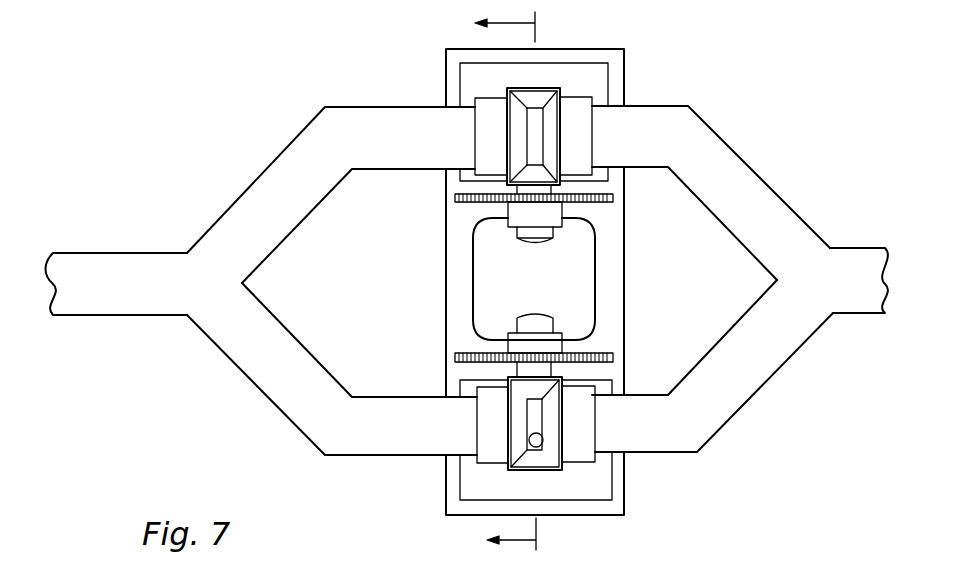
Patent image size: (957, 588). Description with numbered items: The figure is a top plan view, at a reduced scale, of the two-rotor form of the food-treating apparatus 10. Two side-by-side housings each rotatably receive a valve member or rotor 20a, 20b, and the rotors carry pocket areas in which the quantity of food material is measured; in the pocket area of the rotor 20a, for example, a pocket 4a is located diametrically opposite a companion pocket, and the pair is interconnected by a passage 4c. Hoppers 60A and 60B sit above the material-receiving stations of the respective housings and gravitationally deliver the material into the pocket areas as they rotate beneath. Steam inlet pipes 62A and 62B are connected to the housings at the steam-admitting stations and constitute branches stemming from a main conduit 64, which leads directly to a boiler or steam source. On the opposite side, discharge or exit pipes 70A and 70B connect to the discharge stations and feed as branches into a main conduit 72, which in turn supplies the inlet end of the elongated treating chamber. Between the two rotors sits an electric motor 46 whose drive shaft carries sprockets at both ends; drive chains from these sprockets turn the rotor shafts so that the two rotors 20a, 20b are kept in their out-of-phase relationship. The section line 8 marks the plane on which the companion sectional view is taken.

The apparatus 10 is at (437, 100).
The main conduit 72 is at (93, 263).
The discharge or exit pipe 70B is at (280, 178).
The discharge or exit pipe 70A is at (270, 373).
The steam inlet pipe 62B is at (730, 175).
The steam inlet pipe 62A is at (748, 375).
The main conduit 64 is at (858, 262).
The hopper 60B is at (550, 165).
The hopper 60A is at (559, 380).
The valve member or rotor 20b is at (541, 138).
The valve member or rotor 20a is at (545, 419).
The electric motor 46 is at (490, 263).
The pocket 4a is at (527, 411).
The passage 4c is at (530, 443).
The section line 8 is at (520, 285).